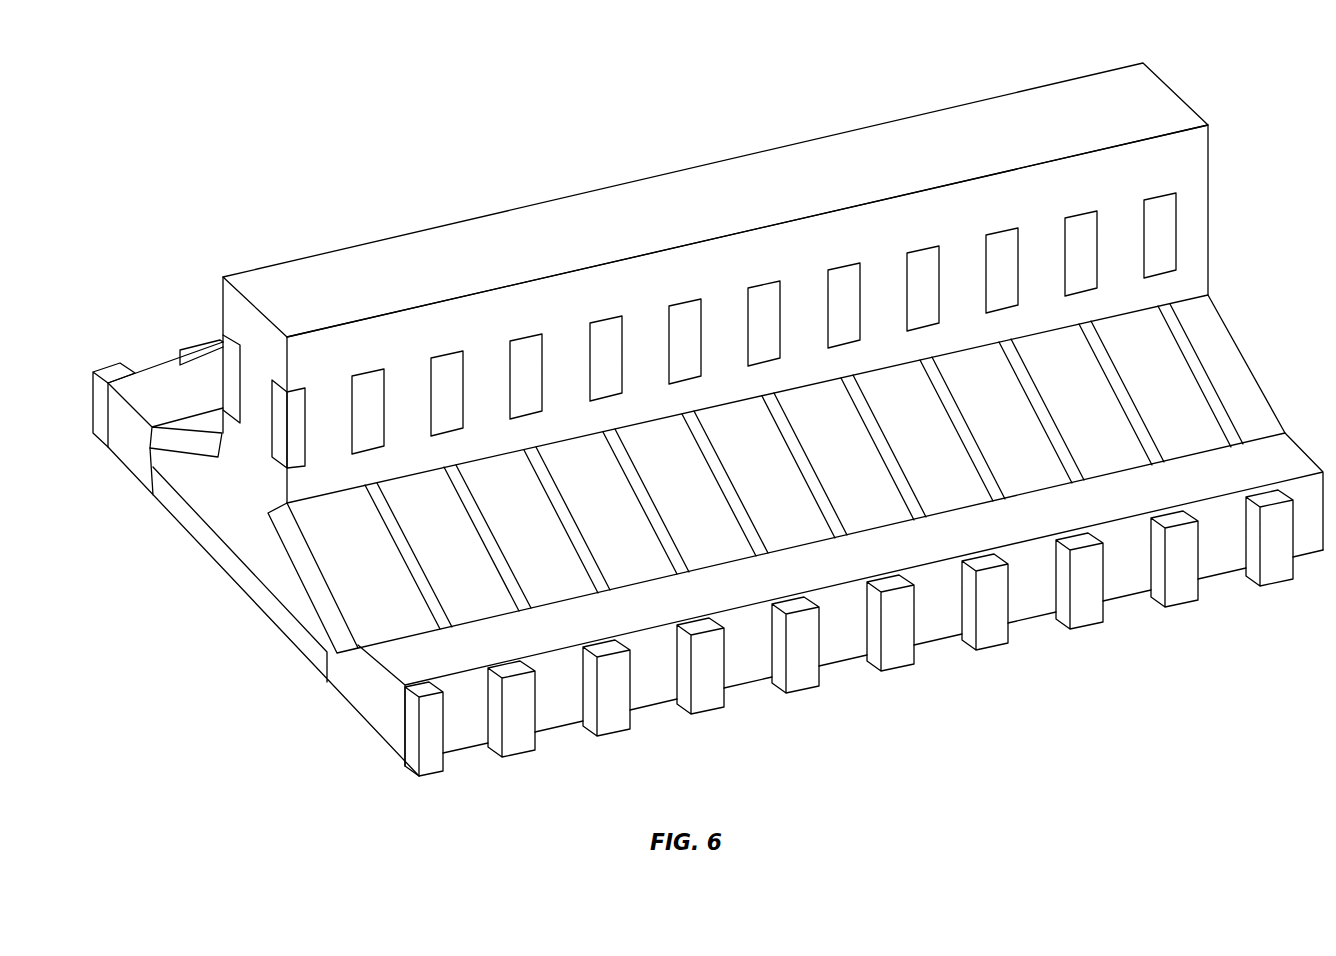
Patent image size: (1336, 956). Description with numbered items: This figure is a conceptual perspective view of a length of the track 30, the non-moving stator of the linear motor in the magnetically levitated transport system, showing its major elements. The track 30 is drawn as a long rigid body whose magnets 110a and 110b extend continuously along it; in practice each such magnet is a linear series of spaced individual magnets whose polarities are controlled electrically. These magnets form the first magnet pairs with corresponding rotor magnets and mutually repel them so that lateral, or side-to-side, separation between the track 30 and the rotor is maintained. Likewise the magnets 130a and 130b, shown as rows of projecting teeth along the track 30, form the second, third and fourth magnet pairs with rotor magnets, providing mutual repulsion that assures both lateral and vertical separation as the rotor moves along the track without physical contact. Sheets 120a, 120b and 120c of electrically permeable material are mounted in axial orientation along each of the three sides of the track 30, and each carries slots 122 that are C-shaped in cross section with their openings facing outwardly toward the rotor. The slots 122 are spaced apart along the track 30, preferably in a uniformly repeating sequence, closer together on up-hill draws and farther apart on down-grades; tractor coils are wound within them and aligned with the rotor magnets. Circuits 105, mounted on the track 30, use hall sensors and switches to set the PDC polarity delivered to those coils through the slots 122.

The track 30 is at (262, 162).
The circuits 105 is at (237, 523).
The magnet 110a is at (232, 365).
The magnet 110b is at (368, 390).
The sheet 120a is at (163, 450).
The sheet 120b is at (1220, 348).
The sheet 120c is at (277, 612).
The slots 122 is at (1268, 378).
The magnet 130a is at (178, 363).
The magnet 130b is at (616, 734).